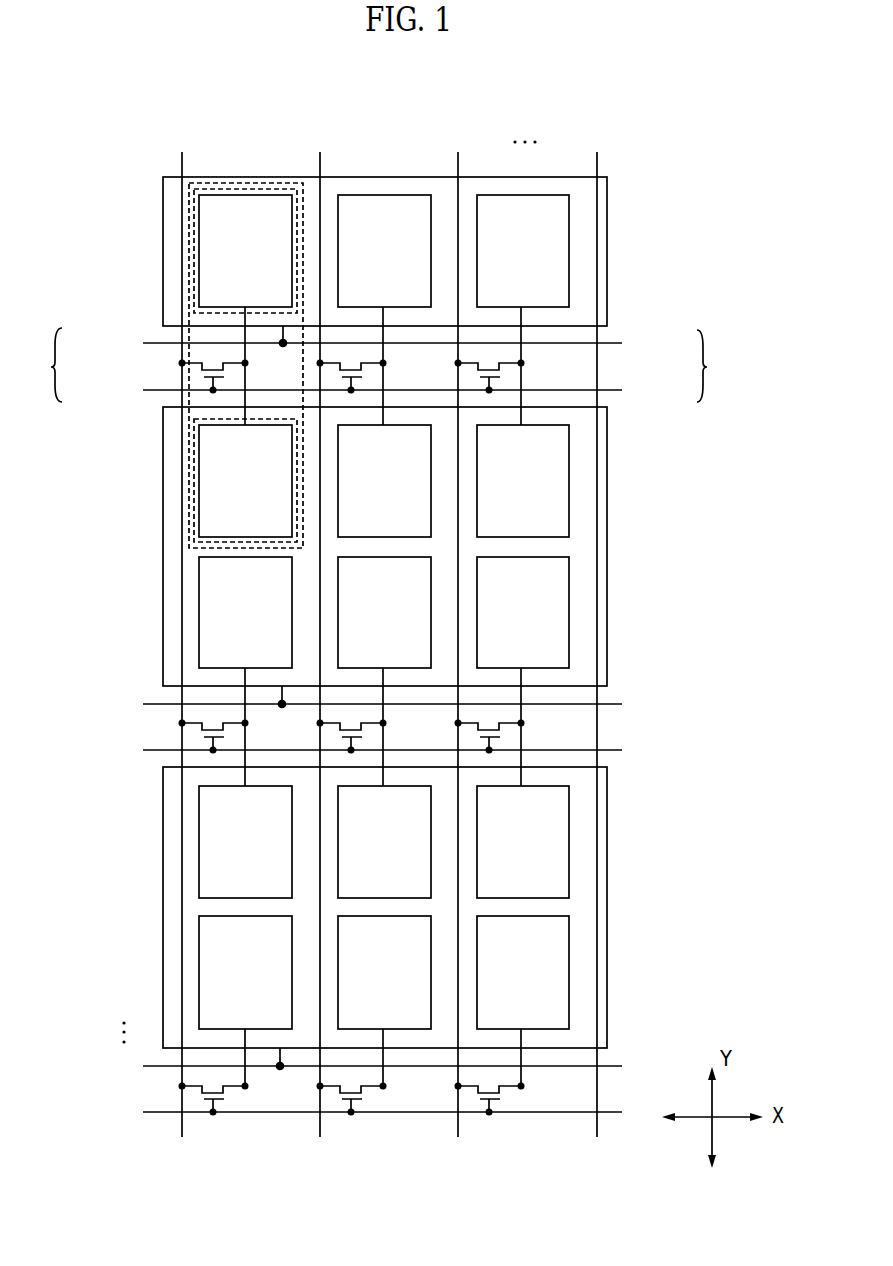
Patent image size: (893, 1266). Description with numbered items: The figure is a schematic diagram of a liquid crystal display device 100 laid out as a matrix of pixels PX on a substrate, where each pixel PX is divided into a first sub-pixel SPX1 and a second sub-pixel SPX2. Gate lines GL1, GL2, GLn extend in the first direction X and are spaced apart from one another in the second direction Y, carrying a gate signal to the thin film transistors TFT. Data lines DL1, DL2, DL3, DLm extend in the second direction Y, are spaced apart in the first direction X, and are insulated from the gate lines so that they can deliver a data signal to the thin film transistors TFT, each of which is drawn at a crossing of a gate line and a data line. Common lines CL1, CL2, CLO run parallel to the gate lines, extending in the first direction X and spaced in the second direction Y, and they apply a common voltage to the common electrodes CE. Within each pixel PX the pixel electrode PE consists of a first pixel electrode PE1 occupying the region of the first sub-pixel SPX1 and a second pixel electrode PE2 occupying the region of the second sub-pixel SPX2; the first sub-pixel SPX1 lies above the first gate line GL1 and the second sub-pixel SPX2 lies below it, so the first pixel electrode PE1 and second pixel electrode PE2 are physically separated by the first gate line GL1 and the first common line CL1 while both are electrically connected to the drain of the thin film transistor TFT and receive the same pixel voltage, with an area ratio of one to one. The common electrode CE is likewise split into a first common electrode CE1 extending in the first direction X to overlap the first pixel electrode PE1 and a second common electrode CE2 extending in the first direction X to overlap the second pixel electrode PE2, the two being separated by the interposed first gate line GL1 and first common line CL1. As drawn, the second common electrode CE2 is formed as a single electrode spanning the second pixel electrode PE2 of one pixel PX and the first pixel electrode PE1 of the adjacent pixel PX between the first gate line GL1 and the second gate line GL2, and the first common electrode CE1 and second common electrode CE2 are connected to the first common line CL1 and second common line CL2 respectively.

The liquid crystal display device 100 is at (681, 176).
The pixel PX is at (236, 183).
The first sub-pixel SPX1 is at (262, 189).
The second sub-pixel SPX2 is at (193, 497).
The first data line DL1 is at (181, 633).
The second data line DL2 is at (319, 633).
The third data line DL3 is at (457, 633).
The m-th data line DLm is at (595, 633).
The first gate line GL1 is at (366, 390).
The second gate line GL2 is at (366, 750).
The n-th gate line GLn is at (365, 1112).
The first common line CL1 is at (366, 341).
The second common line CL2 is at (366, 701).
The o-th common line CLO is at (365, 1063).
The thin film transistor TFT is at (352, 711).
The first pixel electrode PE1 is at (199, 270).
The second pixel electrode PE2 is at (199, 472).
The pixel electrode PE is at (44, 365).
The first common electrode CE1 is at (606, 252).
The second common electrode CE2 is at (606, 478).
The common electrode CE is at (712, 366).